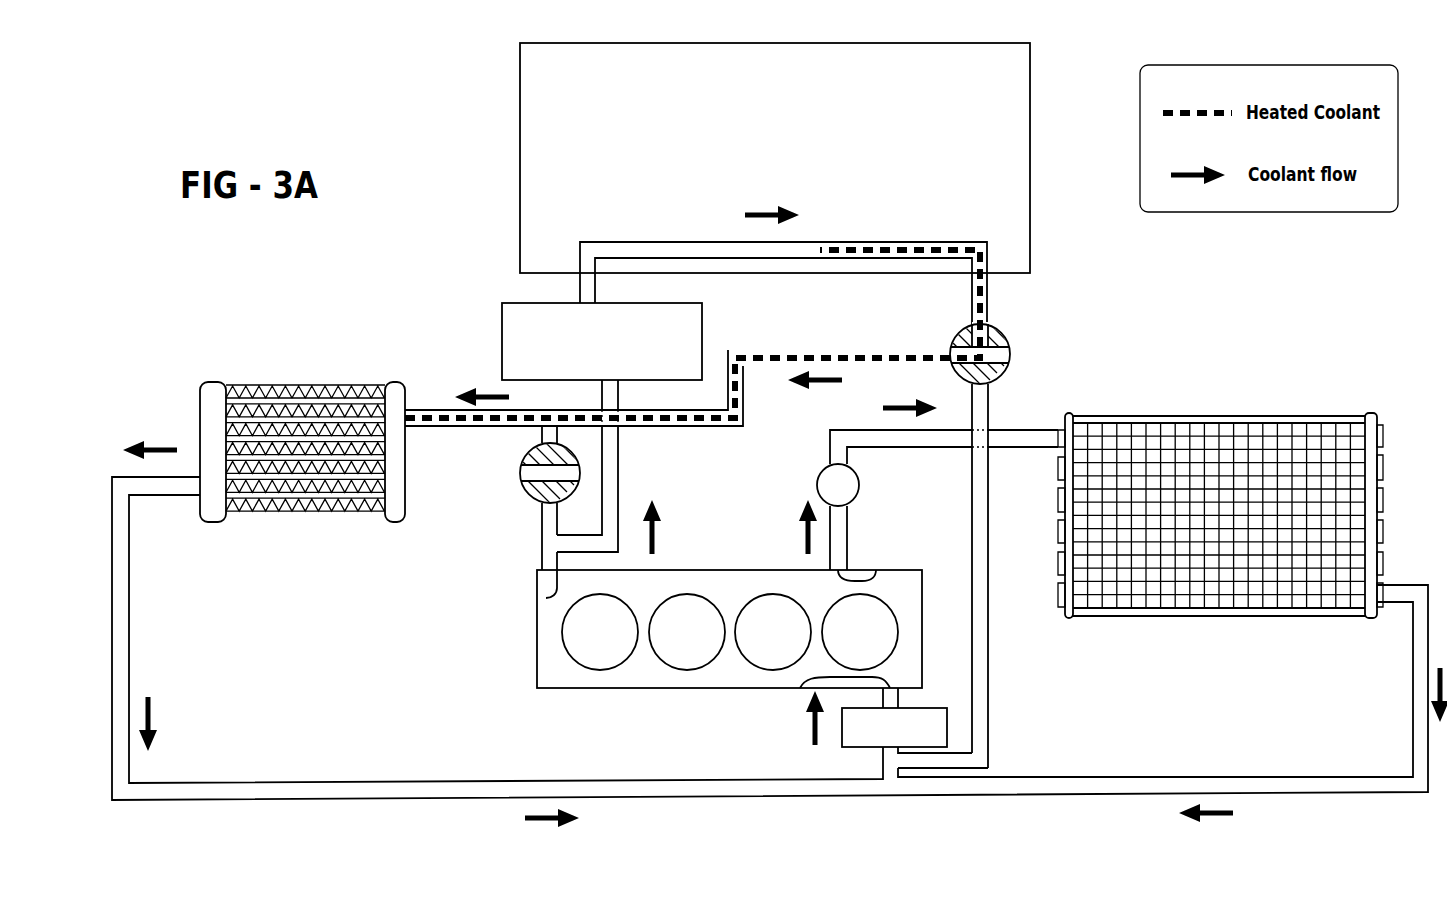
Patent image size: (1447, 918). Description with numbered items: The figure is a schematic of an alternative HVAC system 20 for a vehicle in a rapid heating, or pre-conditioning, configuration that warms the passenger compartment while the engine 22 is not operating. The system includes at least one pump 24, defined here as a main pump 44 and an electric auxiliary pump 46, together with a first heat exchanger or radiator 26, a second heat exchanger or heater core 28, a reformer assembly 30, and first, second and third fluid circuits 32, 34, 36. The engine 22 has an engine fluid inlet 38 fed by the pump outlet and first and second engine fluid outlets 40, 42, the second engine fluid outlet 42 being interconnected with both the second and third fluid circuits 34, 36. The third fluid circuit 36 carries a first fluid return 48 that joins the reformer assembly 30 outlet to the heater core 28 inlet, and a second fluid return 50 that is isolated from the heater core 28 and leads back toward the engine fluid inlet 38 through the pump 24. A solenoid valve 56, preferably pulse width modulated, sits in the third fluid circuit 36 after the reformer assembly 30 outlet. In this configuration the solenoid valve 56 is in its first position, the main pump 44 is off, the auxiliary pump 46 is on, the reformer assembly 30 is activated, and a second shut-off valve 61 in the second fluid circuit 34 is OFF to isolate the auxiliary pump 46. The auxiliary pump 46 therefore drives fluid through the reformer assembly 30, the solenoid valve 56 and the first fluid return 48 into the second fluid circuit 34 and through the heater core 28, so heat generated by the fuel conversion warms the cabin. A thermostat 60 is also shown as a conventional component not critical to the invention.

The HVAC system 20 is at (1072, 125).
The engine 22 is at (663, 688).
The pump 24 is at (478, 330).
The first heat exchanger 26 is at (1168, 616).
The second heat exchanger 28 is at (298, 382).
The reformer assembly 30 is at (520, 107).
The first fluid circuit 32 is at (848, 540).
The second fluid circuit 34 is at (462, 428).
The third fluid circuit 36 is at (930, 240).
The engine fluid inlet 38 is at (805, 682).
The first engine fluid outlet 40 is at (873, 578).
The second engine fluid outlet 42 is at (545, 598).
The main pump 44 is at (850, 743).
The auxiliary pump 46 is at (702, 332).
The first fluid return 48 is at (868, 367).
The second fluid return 50 is at (988, 417).
The solenoid valve 56 is at (1004, 340).
The thermostat 60 is at (822, 474).
The second shut-off valve 61 is at (522, 493).